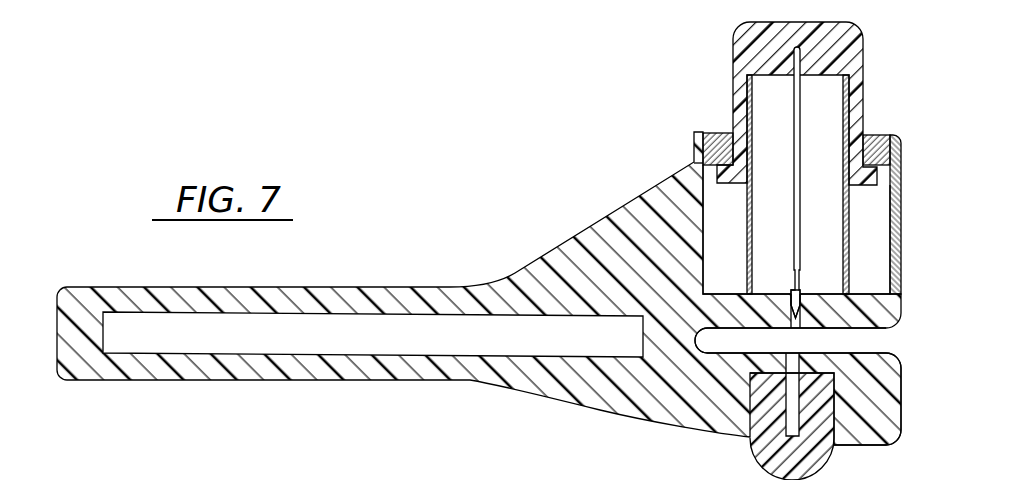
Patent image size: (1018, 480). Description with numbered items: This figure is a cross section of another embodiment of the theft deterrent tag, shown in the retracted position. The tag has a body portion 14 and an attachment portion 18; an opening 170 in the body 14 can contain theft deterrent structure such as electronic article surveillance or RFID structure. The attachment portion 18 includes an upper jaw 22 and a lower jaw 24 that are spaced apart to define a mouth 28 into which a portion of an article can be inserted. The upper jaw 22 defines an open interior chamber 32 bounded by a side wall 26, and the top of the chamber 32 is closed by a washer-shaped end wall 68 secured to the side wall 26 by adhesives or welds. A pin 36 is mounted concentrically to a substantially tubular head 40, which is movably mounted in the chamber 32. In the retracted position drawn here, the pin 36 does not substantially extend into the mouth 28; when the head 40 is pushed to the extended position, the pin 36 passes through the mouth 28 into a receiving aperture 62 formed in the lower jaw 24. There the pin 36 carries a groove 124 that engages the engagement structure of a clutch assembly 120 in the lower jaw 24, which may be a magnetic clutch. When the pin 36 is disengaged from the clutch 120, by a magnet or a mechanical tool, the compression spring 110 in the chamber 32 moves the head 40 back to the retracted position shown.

The body portion 14 is at (279, 278).
The attachment portion 18 is at (540, 251).
The opening 170 is at (208, 343).
The upper jaw 22 is at (900, 181).
The lower jaw 24 is at (898, 417).
The side wall 26 is at (900, 214).
The mouth 28 is at (880, 343).
The interior chamber 32 is at (873, 247).
The pin 36 is at (798, 148).
The head 40 is at (733, 56).
The receiving aperture 62 is at (786, 428).
The end wall 68 is at (880, 134).
The compression spring 110 is at (745, 207).
The clutch assembly 120 is at (825, 453).
The groove 124 is at (800, 288).